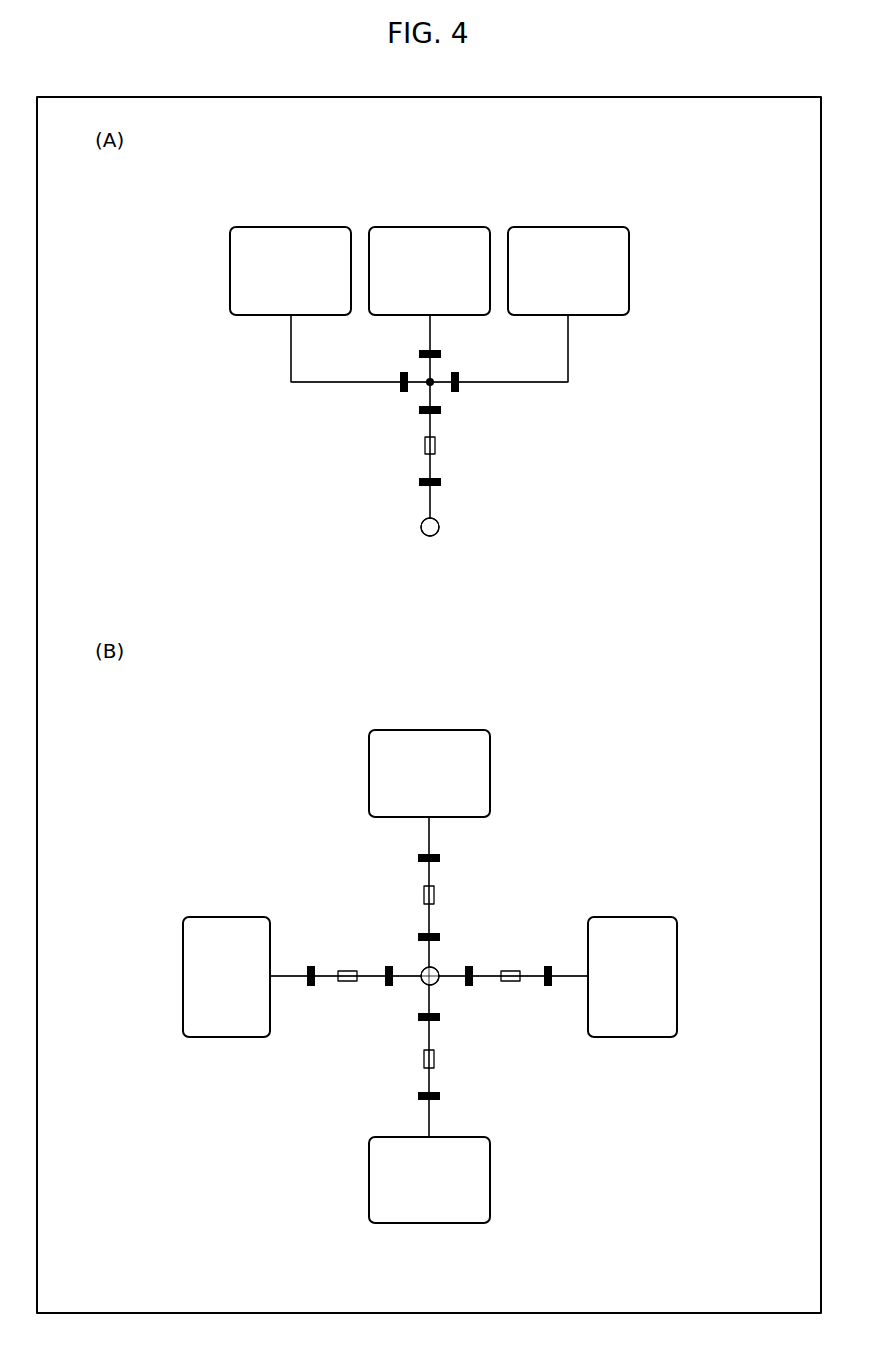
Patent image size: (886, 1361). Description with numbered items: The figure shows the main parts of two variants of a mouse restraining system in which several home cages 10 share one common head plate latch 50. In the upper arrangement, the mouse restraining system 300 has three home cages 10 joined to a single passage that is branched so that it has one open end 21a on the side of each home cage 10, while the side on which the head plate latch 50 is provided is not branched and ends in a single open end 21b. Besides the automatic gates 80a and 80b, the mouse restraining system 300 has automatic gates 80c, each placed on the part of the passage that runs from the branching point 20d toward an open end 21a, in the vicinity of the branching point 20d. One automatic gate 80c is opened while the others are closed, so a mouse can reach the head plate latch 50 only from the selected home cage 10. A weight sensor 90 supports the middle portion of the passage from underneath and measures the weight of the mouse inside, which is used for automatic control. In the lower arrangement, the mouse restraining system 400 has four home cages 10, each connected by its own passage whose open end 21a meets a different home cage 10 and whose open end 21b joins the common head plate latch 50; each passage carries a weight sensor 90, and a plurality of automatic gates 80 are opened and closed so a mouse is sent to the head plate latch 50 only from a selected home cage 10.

The home cage 10 is at (292, 225).
The open end 21a is at (289, 317).
The open end 21b is at (427, 520).
The automatic gate 80 is at (451, 719).
The automatic gate 80a is at (420, 410).
The automatic gate 80b is at (442, 482).
The automatic gate 80c is at (403, 380).
The branching point 20d is at (432, 384).
The weight sensor 90 is at (436, 446).
The head plate latch 50 is at (440, 527).
The mouse restraining system 300 is at (258, 481).
The mouse restraining system 400 is at (614, 1194).